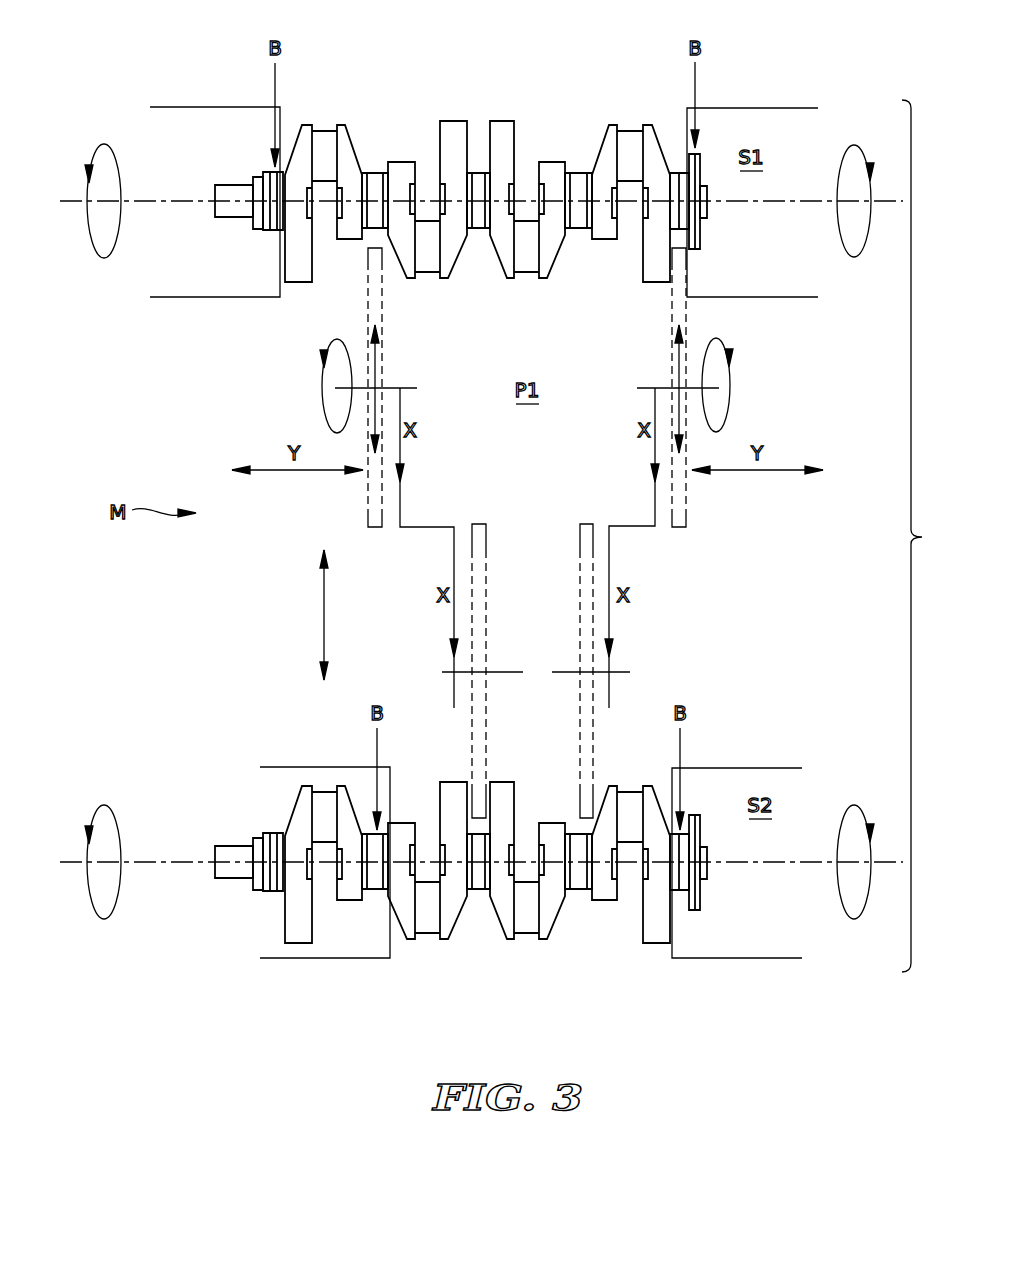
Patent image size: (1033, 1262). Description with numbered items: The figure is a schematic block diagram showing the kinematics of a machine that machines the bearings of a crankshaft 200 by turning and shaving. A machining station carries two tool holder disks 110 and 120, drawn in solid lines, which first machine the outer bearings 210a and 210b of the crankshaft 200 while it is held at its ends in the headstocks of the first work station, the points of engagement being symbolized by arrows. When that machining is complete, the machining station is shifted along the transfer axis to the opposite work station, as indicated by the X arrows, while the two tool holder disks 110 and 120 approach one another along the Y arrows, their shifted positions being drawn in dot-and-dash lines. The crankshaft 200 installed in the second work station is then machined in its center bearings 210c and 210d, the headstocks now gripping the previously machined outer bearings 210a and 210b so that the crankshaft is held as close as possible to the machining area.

The crankshaft 200 is at (468, 524).
The outer bearing 210a is at (372, 173).
The outer bearing 210b is at (682, 173).
The center bearing 210c is at (476, 890).
The center bearing 210d is at (578, 890).
The tool holder disk 110 is at (370, 311).
The tool holder disk 120 is at (684, 324).